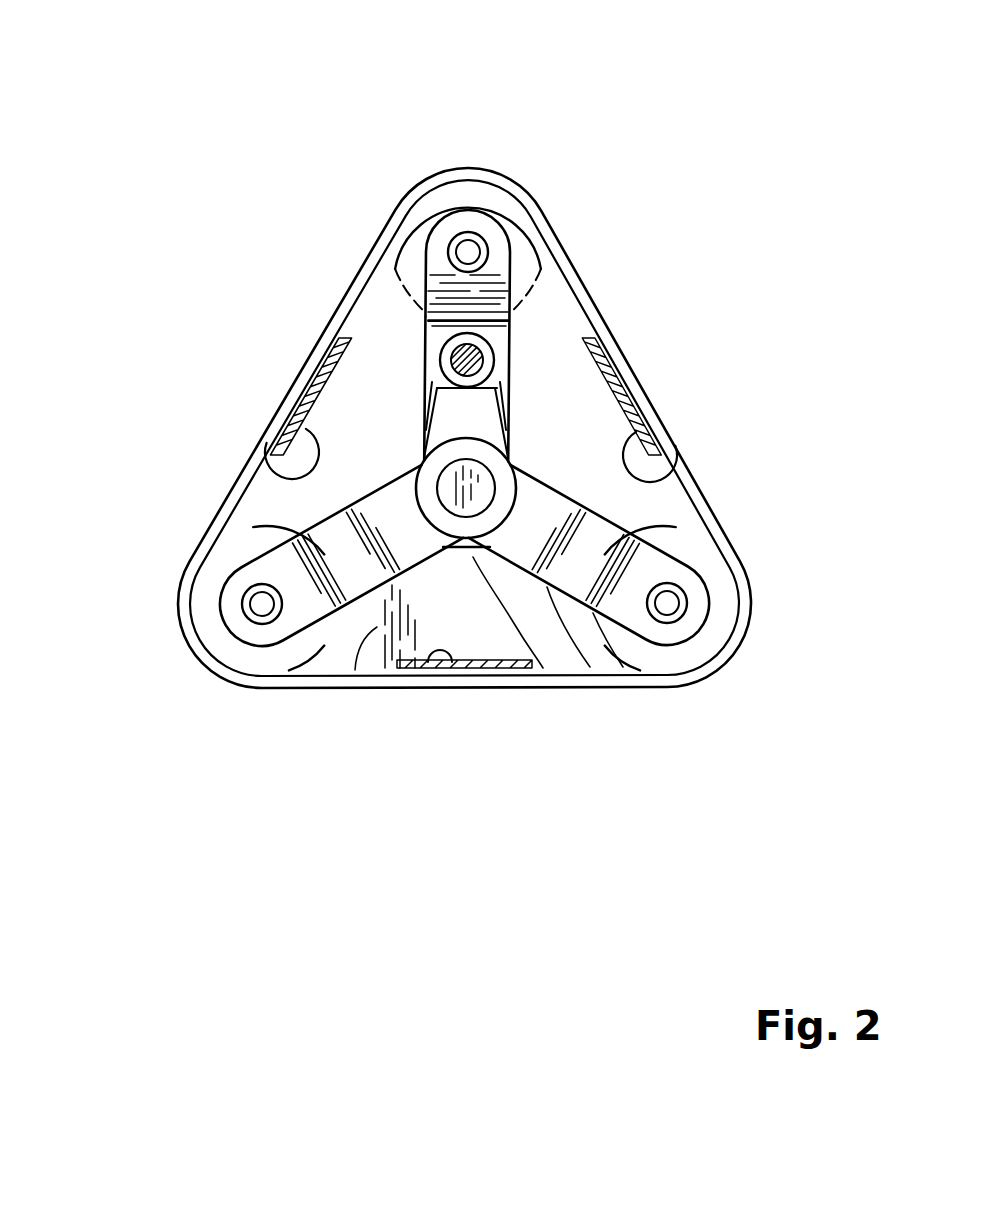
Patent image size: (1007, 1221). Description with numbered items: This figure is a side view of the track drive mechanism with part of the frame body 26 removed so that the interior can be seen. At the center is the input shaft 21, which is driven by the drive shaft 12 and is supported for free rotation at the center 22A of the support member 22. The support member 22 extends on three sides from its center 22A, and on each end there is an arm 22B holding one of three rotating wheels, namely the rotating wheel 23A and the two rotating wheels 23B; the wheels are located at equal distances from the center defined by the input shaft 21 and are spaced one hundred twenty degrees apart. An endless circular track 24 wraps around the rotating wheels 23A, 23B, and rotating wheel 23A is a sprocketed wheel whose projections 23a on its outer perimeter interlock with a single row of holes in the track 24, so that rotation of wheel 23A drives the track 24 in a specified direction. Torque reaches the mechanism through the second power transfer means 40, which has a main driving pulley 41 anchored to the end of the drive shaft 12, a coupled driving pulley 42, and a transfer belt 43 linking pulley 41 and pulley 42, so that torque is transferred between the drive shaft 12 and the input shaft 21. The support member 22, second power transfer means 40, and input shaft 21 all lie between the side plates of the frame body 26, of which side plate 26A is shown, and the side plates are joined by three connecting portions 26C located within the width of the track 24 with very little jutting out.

The drive shaft 12 is at (430, 358).
The input shaft 21 is at (483, 473).
The support member 22 is at (440, 558).
The center 22A is at (567, 693).
The arm 22B is at (500, 342).
The rotating wheel 23A is at (483, 200).
The rotating wheel 23B is at (695, 558).
The projections 23a is at (575, 297).
The track 24 is at (547, 208).
The frame body 26 is at (452, 633).
The side plate 26A is at (465, 823).
The connecting portions 26C is at (287, 478).
The second power transfer means 40 is at (274, 321).
The main driving pulley 41 is at (452, 360).
The coupled driving pulley 42 is at (430, 458).
The transfer belt 43 is at (432, 380).